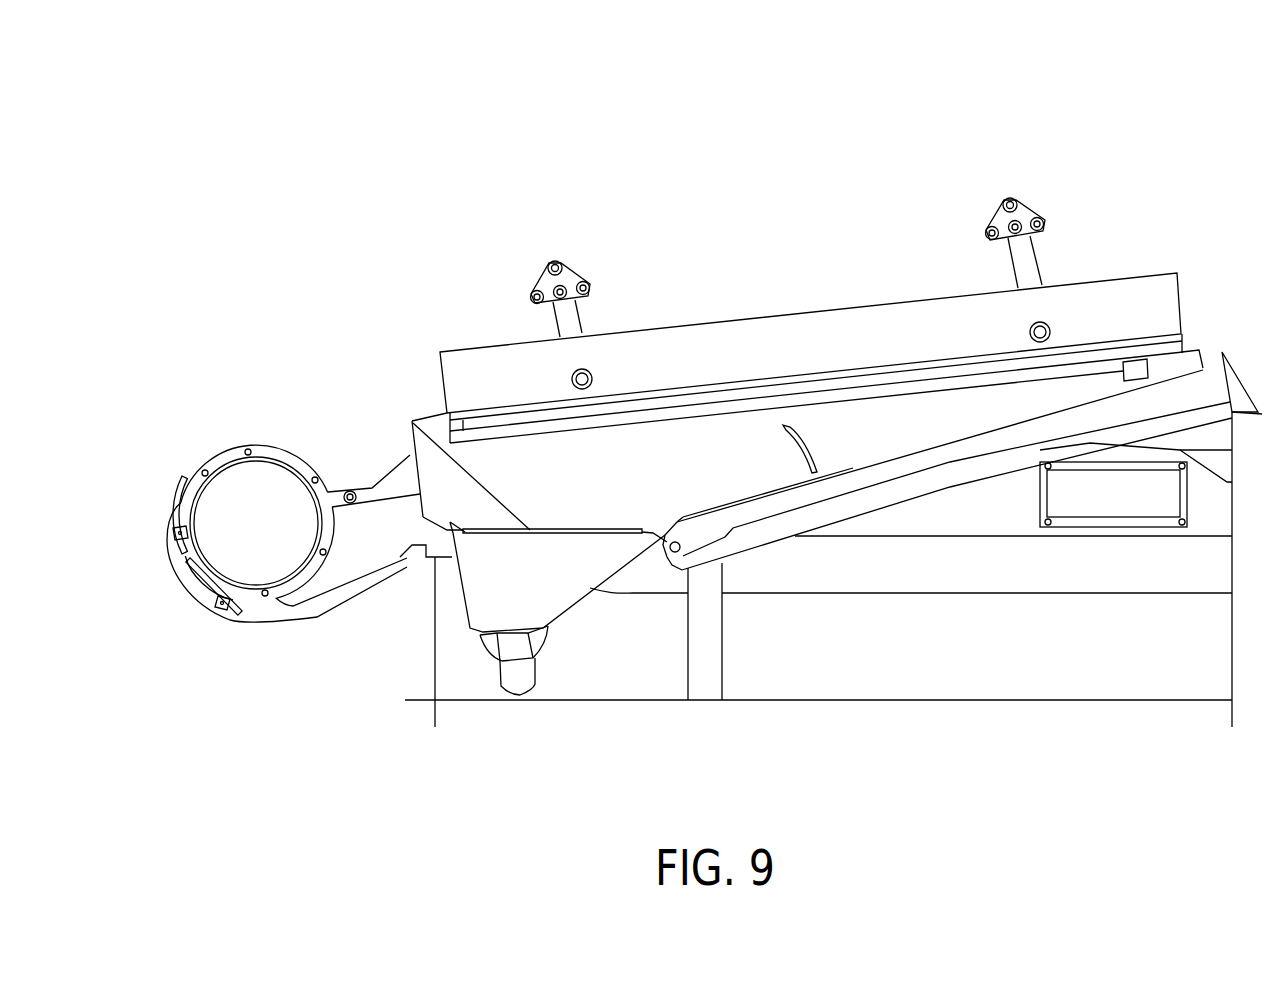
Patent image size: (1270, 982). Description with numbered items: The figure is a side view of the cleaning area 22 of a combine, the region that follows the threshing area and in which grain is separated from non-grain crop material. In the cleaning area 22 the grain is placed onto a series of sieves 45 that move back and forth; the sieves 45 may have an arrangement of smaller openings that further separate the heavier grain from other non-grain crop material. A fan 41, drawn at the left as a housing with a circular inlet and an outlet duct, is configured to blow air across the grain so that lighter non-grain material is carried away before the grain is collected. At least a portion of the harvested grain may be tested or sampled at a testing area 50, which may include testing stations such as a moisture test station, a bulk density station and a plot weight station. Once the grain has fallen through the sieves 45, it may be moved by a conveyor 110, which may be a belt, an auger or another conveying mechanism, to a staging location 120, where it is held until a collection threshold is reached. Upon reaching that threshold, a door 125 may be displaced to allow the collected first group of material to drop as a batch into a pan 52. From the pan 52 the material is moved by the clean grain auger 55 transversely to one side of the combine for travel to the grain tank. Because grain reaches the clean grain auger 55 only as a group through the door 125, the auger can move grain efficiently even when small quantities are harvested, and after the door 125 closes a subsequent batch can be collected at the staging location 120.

The cleaning area 22 is at (1146, 124).
The fan 41 is at (224, 493).
The sieves 45 is at (870, 378).
The testing area 50 is at (669, 244).
The pan 52 is at (520, 603).
The clean grain auger 55 is at (555, 666).
The conveyor 110 is at (797, 486).
The staging location 120 is at (538, 451).
The door 125 is at (411, 420).